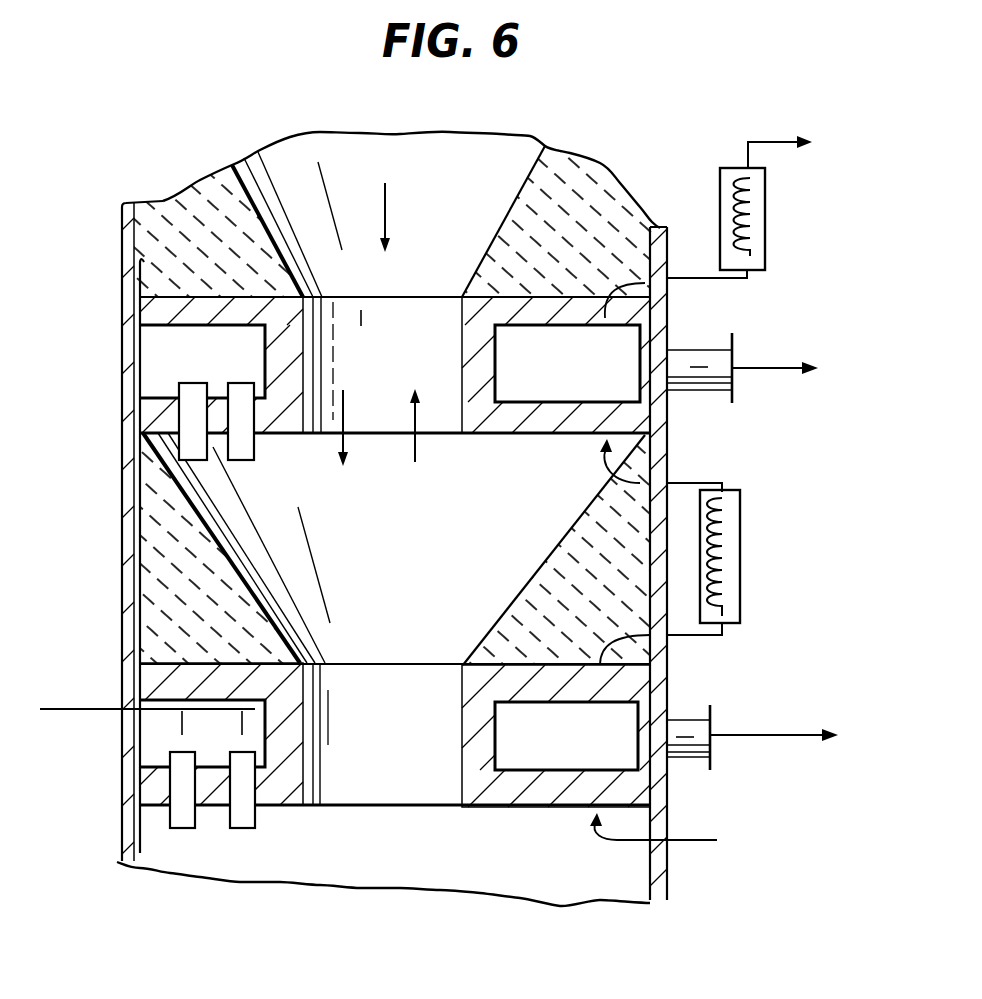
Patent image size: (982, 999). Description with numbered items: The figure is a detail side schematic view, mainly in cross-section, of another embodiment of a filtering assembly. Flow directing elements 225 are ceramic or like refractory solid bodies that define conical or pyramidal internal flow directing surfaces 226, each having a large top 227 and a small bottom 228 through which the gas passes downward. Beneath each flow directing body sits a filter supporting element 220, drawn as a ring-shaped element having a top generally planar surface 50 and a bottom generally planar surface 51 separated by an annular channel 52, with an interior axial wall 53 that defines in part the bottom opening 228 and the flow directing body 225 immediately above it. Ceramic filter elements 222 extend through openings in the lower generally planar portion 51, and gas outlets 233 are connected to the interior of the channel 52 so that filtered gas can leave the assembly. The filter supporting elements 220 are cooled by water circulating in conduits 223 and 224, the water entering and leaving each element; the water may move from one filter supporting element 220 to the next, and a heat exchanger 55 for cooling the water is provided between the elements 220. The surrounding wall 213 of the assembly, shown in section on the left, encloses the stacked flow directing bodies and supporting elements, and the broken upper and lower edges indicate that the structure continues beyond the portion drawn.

The outer wall 213 is at (124, 341).
The filter supporting element 220 is at (620, 370).
The ceramic filter element 222 is at (244, 830).
The conduit 223 is at (690, 482).
The conduit 224 is at (690, 278).
The flow directing element 225 is at (586, 198).
The flow directing surface 226 is at (249, 197).
The top 227 is at (351, 494).
The bottom opening 228 is at (419, 441).
The gas outlet 233 is at (718, 392).
The top generally planar surface 50 is at (227, 677).
The bottom generally planar surface 51 is at (215, 766).
The annular channel 52 is at (150, 741).
The interior axial wall 53 is at (287, 736).
The heat exchanger 55 is at (766, 218).